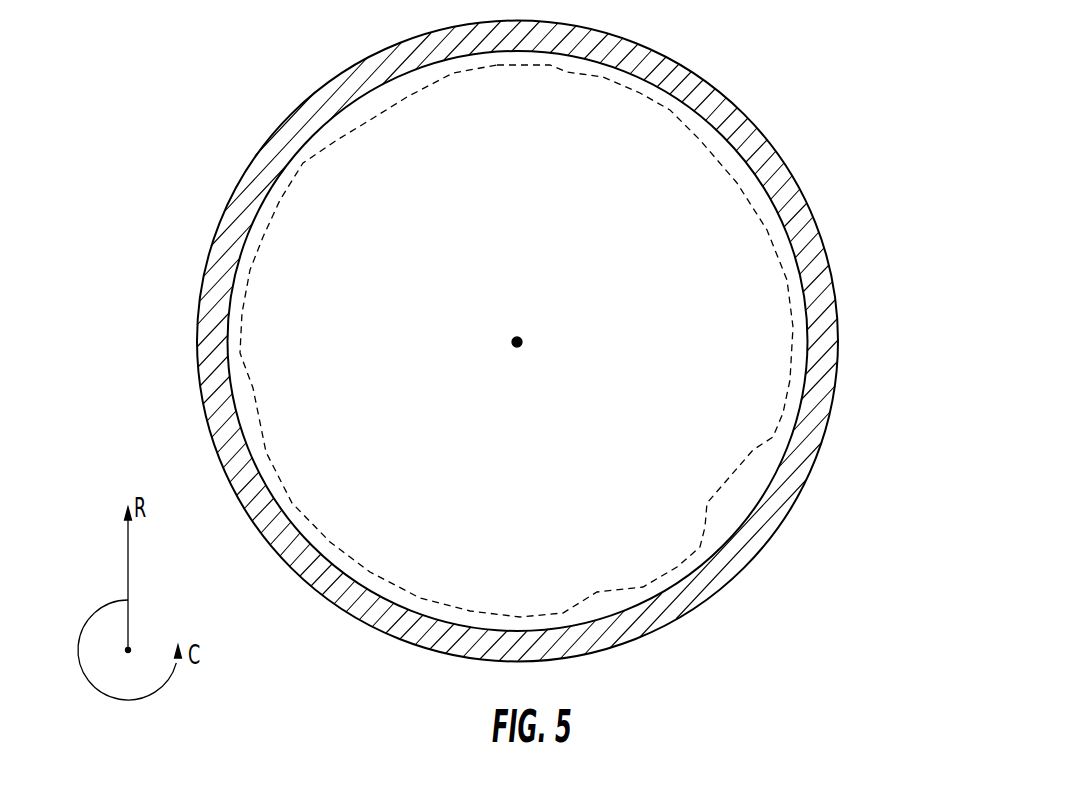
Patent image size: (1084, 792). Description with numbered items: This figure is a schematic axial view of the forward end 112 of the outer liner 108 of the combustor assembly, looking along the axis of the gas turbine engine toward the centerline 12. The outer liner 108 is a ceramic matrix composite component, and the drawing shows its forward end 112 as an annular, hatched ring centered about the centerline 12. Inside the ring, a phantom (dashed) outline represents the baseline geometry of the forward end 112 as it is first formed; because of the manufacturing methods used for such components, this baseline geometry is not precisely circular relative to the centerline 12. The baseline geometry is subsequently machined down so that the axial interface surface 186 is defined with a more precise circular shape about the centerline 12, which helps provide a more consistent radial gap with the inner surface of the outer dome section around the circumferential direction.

The centerline 12 is at (557, 320).
The outer liner 108 is at (925, 378).
The forward end 112 is at (733, 33).
The axial interface surface 186 is at (665, 93).